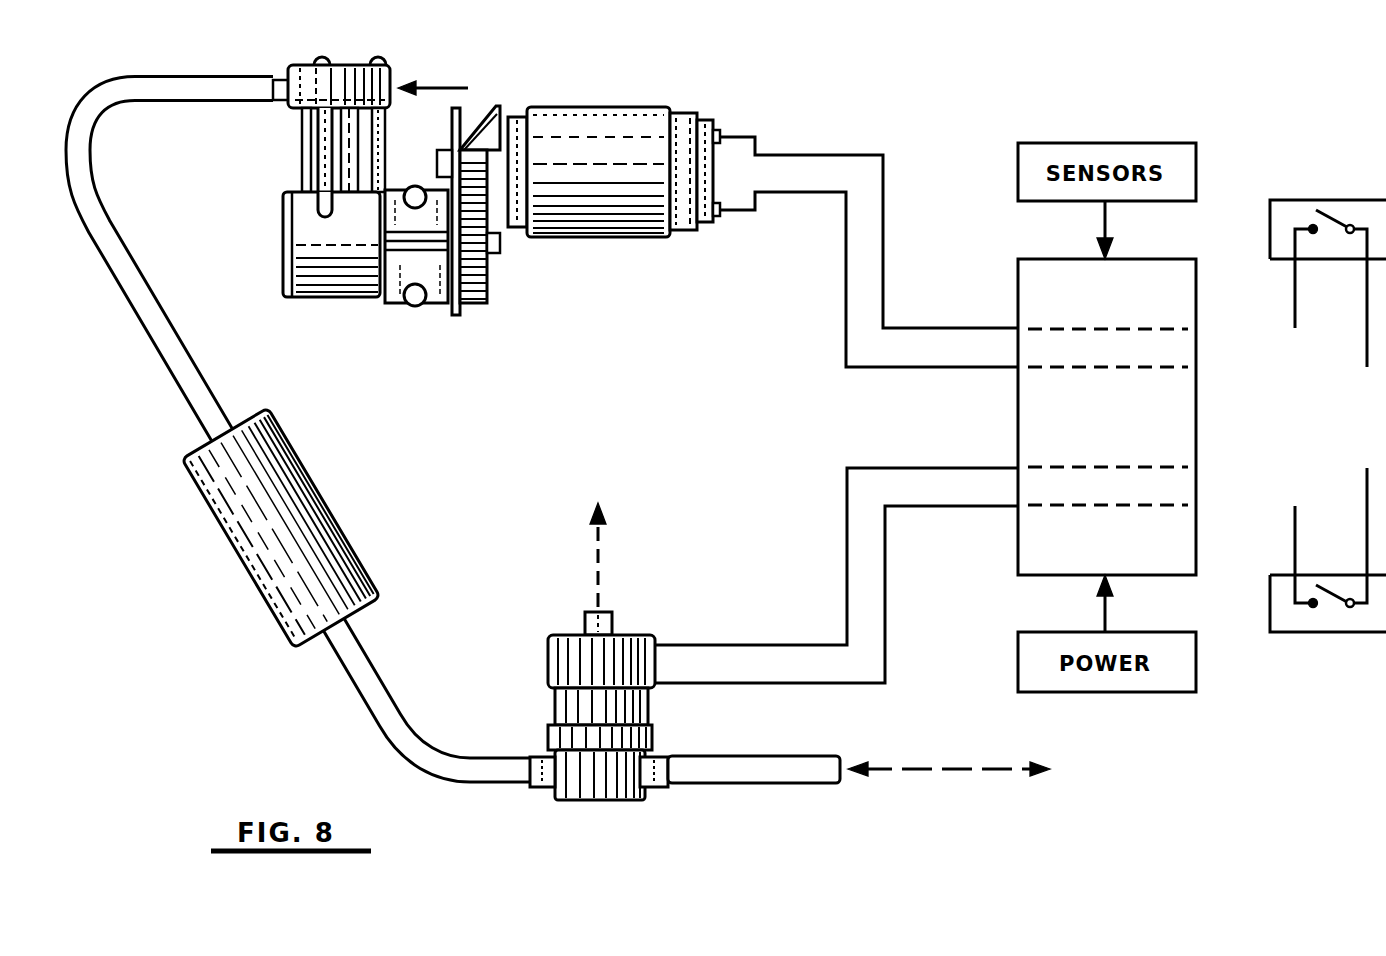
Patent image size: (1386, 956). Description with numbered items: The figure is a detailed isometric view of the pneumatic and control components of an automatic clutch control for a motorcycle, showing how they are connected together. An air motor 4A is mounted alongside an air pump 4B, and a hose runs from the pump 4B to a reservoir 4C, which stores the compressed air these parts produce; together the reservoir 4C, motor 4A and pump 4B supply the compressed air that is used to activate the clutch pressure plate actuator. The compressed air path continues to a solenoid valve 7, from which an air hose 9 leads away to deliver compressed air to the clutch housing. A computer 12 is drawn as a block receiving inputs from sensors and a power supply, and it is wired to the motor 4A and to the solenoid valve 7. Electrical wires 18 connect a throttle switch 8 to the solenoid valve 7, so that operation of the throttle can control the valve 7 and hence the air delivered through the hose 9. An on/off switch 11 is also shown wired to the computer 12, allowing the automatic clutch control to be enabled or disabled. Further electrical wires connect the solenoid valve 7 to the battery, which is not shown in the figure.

The air motor 4A is at (650, 96).
The air pump 4B is at (270, 180).
The reservoir 4C is at (228, 571).
The solenoid valve 7 is at (538, 642).
The throttle switch 8 is at (1333, 633).
The air hose 9 is at (771, 788).
The on/off switch 11 is at (1346, 190).
The computer 12 is at (1004, 414).
The electrical wires 18 is at (846, 528).